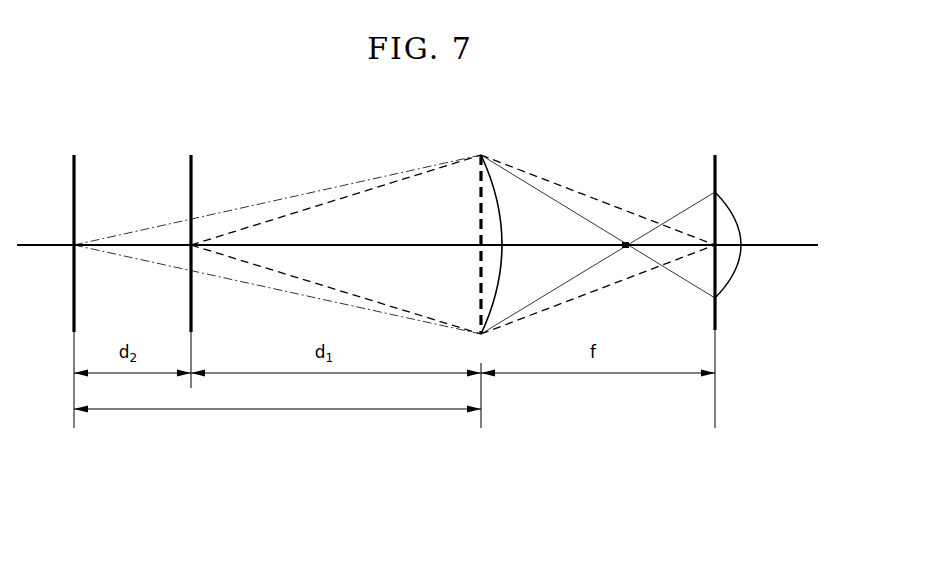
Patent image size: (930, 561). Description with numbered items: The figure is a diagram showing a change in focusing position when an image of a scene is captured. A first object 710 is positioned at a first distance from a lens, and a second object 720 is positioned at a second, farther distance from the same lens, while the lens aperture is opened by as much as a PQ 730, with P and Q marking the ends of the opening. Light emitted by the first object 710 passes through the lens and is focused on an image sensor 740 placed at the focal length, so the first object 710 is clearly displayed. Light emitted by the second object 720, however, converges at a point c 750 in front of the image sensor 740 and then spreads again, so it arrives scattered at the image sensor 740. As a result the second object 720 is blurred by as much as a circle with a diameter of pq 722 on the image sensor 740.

The first object 710 is at (319, 330).
The second object 720 is at (257, 330).
The pq 722 is at (734, 215).
The PQ 730 is at (499, 295).
The image sensor 740 is at (715, 333).
The c 750 is at (626, 268).